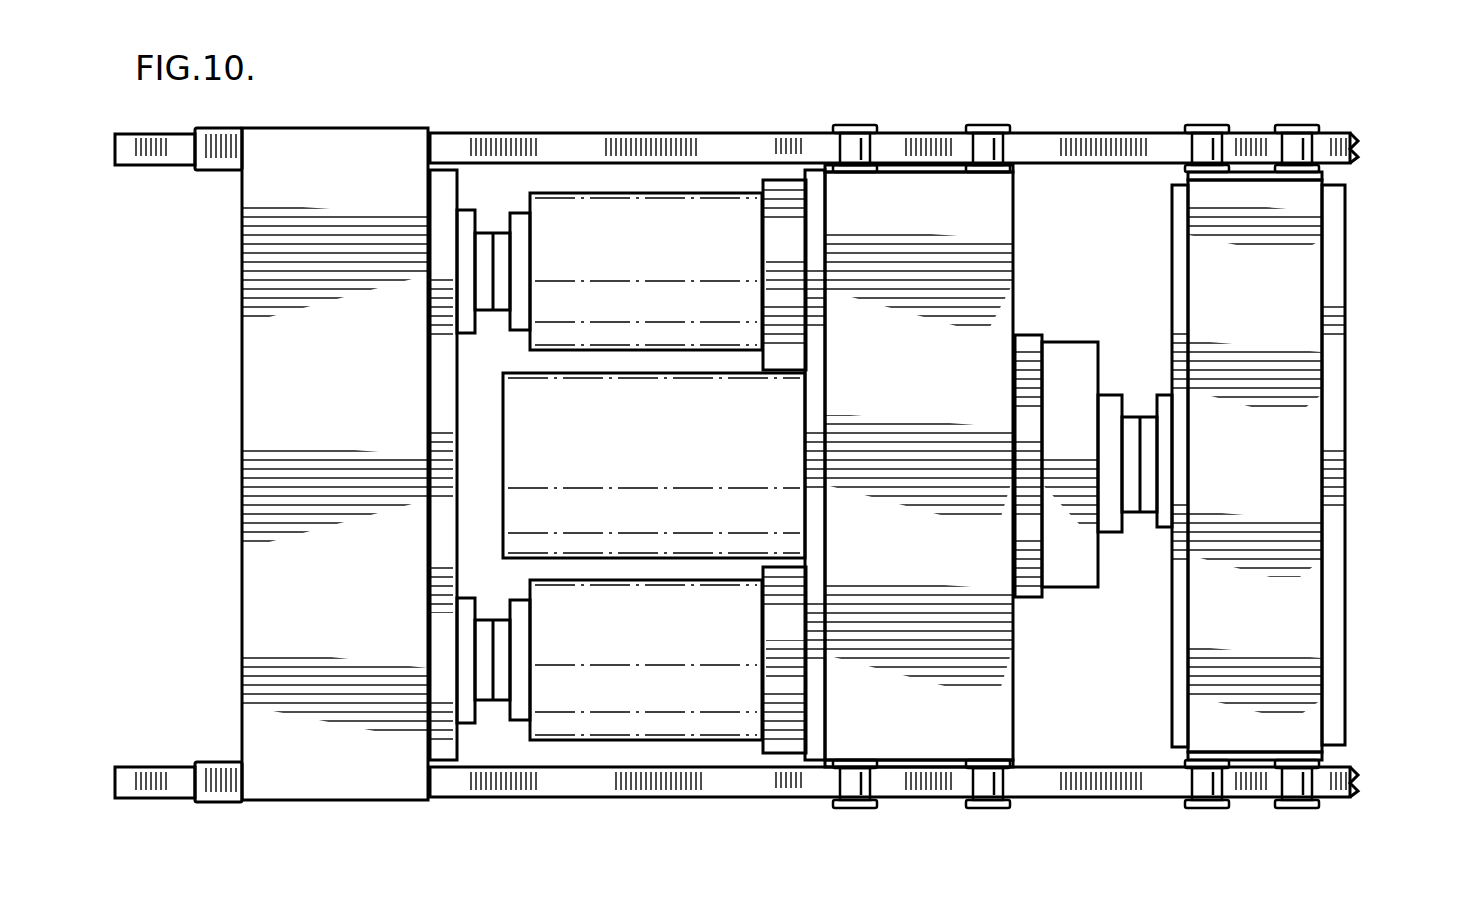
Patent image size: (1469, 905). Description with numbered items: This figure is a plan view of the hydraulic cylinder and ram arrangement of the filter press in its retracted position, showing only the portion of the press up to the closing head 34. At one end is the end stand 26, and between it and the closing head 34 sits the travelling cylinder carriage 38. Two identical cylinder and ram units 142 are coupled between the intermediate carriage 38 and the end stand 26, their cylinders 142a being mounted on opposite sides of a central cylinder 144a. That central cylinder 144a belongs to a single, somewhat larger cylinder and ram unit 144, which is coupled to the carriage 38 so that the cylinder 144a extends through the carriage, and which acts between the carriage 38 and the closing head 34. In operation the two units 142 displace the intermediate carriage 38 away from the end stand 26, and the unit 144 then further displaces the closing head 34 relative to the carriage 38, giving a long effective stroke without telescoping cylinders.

The end stand 26 is at (375, 128).
The cylinder and ram units 142 is at (640, 472).
The cylinders 142a is at (664, 284).
The cylinder and ram unit 144 is at (1130, 562).
The cylinder 144a is at (664, 485).
The travelling cylinder carriage 38 is at (912, 204).
The closing head 34 is at (1283, 275).